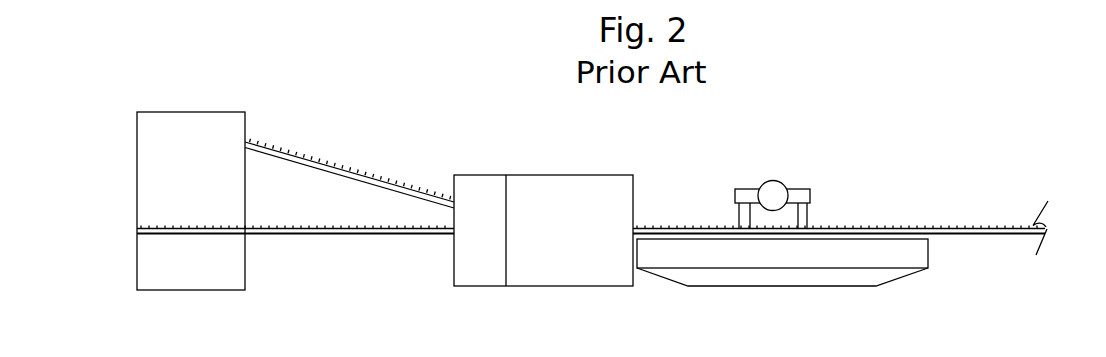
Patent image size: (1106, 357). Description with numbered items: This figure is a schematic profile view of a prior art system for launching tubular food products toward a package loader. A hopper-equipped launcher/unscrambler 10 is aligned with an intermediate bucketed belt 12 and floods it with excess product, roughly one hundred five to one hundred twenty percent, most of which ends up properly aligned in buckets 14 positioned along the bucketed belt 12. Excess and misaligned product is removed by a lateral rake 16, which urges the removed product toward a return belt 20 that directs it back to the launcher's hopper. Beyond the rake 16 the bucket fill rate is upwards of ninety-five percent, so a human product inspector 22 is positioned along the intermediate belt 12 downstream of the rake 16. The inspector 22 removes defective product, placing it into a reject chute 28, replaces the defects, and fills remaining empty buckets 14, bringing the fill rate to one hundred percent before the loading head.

The launcher/unscrambler 10 is at (177, 188).
The intermediate bucketed belt 12 is at (332, 238).
The buckets 14 is at (292, 228).
The lateral rake 16 is at (544, 242).
The return belt 20 is at (350, 166).
The human product inspector 22 is at (778, 182).
The reject chute 28 is at (783, 278).